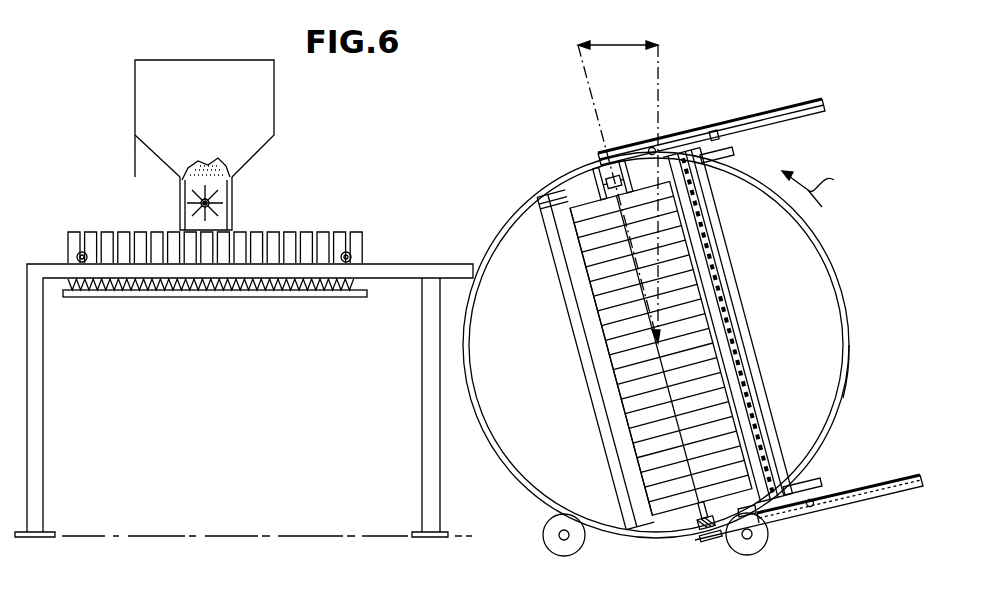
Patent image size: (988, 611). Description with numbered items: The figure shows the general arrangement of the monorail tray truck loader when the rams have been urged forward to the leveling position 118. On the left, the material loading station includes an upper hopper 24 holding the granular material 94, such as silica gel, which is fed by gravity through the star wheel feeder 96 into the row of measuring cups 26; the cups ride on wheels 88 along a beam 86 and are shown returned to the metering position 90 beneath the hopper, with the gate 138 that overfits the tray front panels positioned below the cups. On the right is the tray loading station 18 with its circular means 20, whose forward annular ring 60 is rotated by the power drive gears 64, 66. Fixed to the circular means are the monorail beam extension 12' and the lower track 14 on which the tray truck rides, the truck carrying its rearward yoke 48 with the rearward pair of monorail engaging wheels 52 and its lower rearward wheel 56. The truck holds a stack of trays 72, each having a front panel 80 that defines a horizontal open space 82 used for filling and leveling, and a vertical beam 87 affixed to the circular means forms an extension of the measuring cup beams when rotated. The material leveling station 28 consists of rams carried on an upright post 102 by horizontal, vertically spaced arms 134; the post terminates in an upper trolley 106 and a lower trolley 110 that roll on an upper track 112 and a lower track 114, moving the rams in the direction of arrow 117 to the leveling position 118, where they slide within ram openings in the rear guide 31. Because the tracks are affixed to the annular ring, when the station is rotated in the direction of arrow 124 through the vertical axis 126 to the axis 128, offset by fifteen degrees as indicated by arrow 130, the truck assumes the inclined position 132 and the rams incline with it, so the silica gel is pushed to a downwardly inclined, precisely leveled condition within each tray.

The hopper 24 is at (228, 115).
The granular material 94 is at (182, 180).
The star wheel feeder 96 is at (222, 208).
The measuring cups 26 is at (72, 231).
The wheels 88 is at (77, 257).
The beam 86 is at (430, 264).
The metering position 90 is at (178, 298).
The gate 138 is at (228, 300).
The arrow 130 is at (646, 44).
The axis 128 is at (578, 70).
The vertical axis 126 is at (660, 62).
The tray loading station 18 is at (551, 181).
The circular means 20 is at (519, 484).
The forward annular ring 60 is at (849, 371).
The rearward yoke 48 is at (598, 188).
The rearward pair of monorail engaging wheels 52 is at (613, 178).
The monorail beam extension 12' is at (653, 290).
The front panel 80 is at (543, 198).
The vertical beam 87 is at (577, 345).
The trays 72 is at (605, 346).
The horizontal open space 82 is at (615, 392).
The upright post 102 is at (726, 259).
The arms 134 is at (704, 246).
The rear guide 31 is at (730, 386).
The leveling position 118 is at (745, 348).
The arrow 117 is at (759, 319).
The material leveling station 28 is at (734, 289).
The upper track 112 is at (700, 135).
The upper trolley 106 is at (737, 148).
The lower trolley 110 is at (813, 490).
The lower track 114 is at (878, 497).
The arrow 124 is at (828, 189).
The inclined position 132 is at (660, 516).
The lower track 14 is at (687, 526).
The lower rearward wheel 56 is at (708, 540).
The power drive gear 66 is at (573, 552).
The power drive gear 64 is at (758, 548).